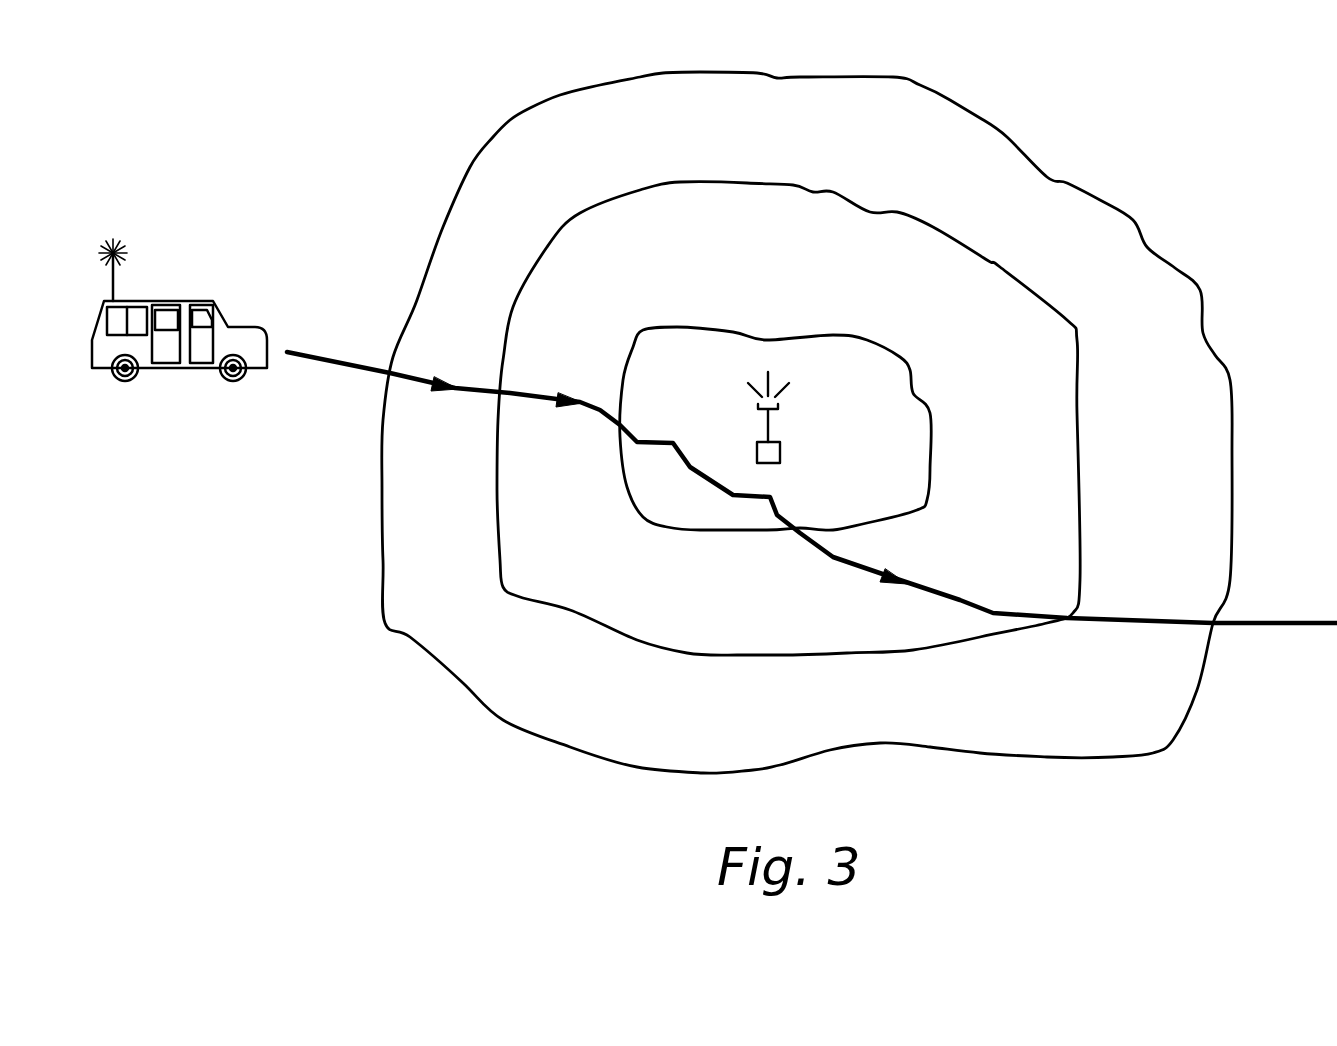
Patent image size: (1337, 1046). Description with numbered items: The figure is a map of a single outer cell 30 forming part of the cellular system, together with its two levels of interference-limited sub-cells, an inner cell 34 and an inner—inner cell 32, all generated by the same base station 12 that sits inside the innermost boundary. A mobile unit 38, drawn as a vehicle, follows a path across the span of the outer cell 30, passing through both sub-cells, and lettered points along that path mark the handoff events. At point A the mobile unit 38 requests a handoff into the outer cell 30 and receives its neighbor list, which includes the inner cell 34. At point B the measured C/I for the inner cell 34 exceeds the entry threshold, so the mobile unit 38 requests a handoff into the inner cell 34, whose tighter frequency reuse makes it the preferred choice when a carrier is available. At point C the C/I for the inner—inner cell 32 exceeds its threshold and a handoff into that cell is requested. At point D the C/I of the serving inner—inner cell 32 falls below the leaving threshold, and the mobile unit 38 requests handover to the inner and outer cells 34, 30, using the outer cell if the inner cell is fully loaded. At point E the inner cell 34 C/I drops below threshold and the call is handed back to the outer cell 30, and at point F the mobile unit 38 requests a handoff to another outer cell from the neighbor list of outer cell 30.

The base station 12 is at (780, 452).
The outer cell 30 is at (1007, 137).
The inner—inner cell 32 is at (833, 190).
The inner cell 34 is at (740, 332).
The mobile unit 38 is at (170, 299).
The point A is at (387, 373).
The point B is at (510, 393).
The point C is at (617, 422).
The point D is at (793, 528).
The point E is at (1067, 622).
The point F is at (1213, 625).